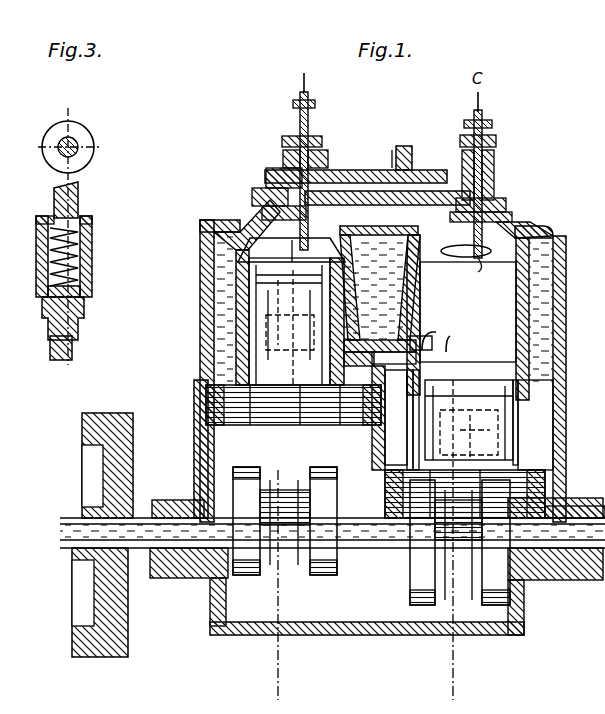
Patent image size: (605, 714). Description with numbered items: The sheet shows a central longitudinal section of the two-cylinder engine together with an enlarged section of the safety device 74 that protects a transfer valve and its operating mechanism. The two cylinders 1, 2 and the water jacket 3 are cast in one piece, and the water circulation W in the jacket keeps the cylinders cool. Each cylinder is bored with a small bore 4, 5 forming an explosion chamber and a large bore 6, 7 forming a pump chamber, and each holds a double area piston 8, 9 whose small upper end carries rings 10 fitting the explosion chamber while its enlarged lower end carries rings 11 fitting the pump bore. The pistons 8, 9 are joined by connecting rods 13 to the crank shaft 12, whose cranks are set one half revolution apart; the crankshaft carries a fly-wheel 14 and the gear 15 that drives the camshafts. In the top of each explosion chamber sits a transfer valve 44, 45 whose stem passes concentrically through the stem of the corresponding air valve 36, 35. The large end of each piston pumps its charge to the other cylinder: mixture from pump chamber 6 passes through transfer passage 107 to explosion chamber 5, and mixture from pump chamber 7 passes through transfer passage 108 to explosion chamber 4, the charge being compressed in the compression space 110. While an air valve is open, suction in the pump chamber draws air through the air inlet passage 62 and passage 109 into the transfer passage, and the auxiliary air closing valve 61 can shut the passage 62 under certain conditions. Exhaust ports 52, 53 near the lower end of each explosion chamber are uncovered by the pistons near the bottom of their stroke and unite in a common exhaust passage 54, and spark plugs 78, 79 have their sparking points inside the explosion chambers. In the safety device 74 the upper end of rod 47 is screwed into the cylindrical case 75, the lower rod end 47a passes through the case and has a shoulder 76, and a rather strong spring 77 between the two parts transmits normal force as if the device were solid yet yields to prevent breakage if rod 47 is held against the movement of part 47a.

In FIG. 1, the cylinder 1 is at (553, 420).
In FIG. 1, the cylinder 2 is at (194, 426).
In FIG. 1, the water jacket 3 is at (566, 278).
In FIG. 1, the small bore 4 is at (515, 306).
In FIG. 1, the small bore 5 is at (303, 251).
In FIG. 1, the large bore 6 is at (472, 420).
In FIG. 1, the large bore 7 is at (195, 394).
In FIG. 1, the double area piston 8 is at (466, 406).
In FIG. 1, the double area piston 9 is at (296, 300).
In FIG. 1, the rings 10 is at (453, 345).
In FIG. 1, the rings 11 is at (228, 425).
In FIG. 1, the crank shaft 12 is at (388, 560).
In FIG. 1, the connecting rods 13 is at (296, 430).
In FIG. 1, the fly-wheel 14 is at (118, 413).
In FIG. 1, the gear 15 is at (595, 506).
In FIG. 1, the air valve 35 is at (266, 178).
In FIG. 1, the air valve 36 is at (506, 210).
In FIG. 1, the transfer valve 44 is at (463, 265).
In FIG. 1, the transfer valve 45 is at (252, 196).
In FIG. 3, the rod 47 is at (80, 196).
In FIG. 3, the lower end of the rod 47a is at (50, 346).
In FIG. 1, the exhaust port 52 is at (436, 331).
In FIG. 1, the exhaust port 53 is at (388, 351).
In FIG. 1, the common exhaust passage 54 is at (389, 418).
In FIG. 1, the auxiliary air closing valve 61 is at (392, 146).
In FIG. 1, the air inlet passage 62 is at (402, 140).
In FIG. 3, the safety device 74 is at (86, 280).
In FIG. 3, the cylindrical case 75 is at (36, 250).
In FIG. 3, the shoulder 76 is at (84, 300).
In FIG. 3, the spring 77 is at (82, 250).
In FIG. 1, the spark plug 78 is at (530, 228).
In FIG. 1, the spark plug 79 is at (236, 232).
In FIG. 1, the transfer passage 107 is at (345, 214).
In FIG. 1, the transfer passage 108 is at (512, 218).
In FIG. 1, the passage 109 is at (356, 183).
In FIG. 1, the compression space 110 is at (291, 250).
In FIG. 1, the water circulation W is at (205, 250).